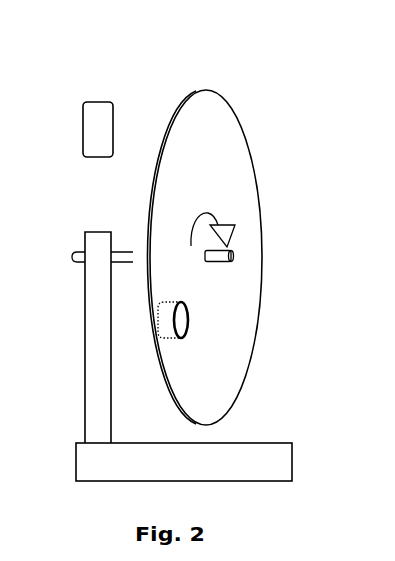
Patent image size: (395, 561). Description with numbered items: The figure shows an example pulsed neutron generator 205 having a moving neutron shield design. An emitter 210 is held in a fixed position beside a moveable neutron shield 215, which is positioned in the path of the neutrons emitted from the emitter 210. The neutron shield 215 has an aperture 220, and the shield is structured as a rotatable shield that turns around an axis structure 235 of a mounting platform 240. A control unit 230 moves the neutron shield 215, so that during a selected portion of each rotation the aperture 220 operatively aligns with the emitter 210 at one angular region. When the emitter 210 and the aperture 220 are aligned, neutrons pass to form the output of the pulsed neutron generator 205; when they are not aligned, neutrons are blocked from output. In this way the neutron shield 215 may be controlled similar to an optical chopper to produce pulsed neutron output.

The pulsed neutron generator 205 is at (258, 80).
The emitter 210 is at (83, 132).
The neutron shield 215 is at (243, 167).
The aperture 220 is at (186, 320).
The control unit 230 is at (292, 462).
The axis structure 235 is at (234, 256).
The mounting platform 240 is at (85, 292).